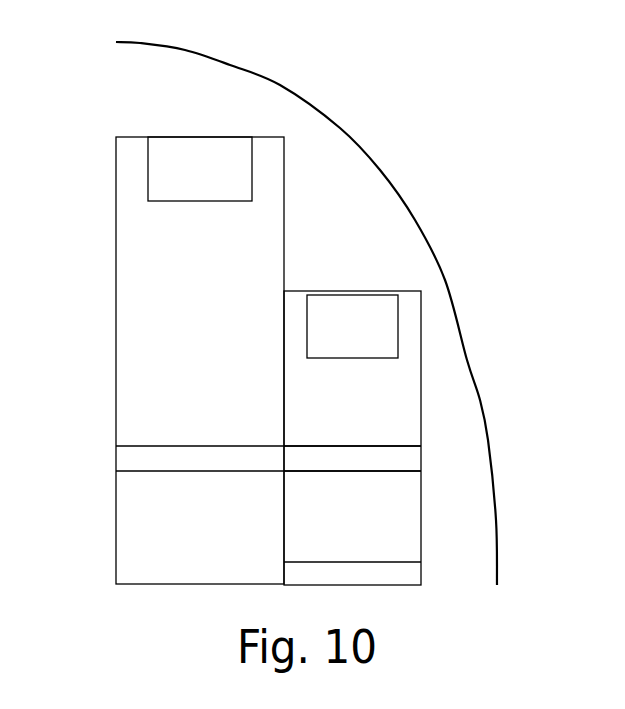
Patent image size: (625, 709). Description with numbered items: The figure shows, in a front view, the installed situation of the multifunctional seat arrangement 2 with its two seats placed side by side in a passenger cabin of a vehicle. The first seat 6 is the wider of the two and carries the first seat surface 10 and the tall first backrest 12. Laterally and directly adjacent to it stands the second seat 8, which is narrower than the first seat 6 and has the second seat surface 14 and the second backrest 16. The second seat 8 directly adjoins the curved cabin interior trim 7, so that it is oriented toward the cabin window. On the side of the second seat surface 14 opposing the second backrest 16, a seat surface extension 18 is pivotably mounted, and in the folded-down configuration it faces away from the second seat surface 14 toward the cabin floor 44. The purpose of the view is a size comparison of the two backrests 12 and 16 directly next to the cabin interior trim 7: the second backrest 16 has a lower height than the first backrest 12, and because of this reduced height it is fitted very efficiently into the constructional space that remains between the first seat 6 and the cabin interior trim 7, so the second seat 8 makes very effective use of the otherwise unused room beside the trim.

The multifunctional seat arrangement 2 is at (291, 306).
The first seat 6 is at (158, 127).
The cabin interior trim 7 is at (360, 147).
The second seat 8 is at (351, 280).
The first seat surface 10 is at (198, 438).
The first backrest 12 is at (220, 317).
The second seat surface 14 is at (342, 438).
The second backrest 16 is at (424, 390).
The seat surface extension 18 is at (406, 515).
The cabin floor 44 is at (475, 553).